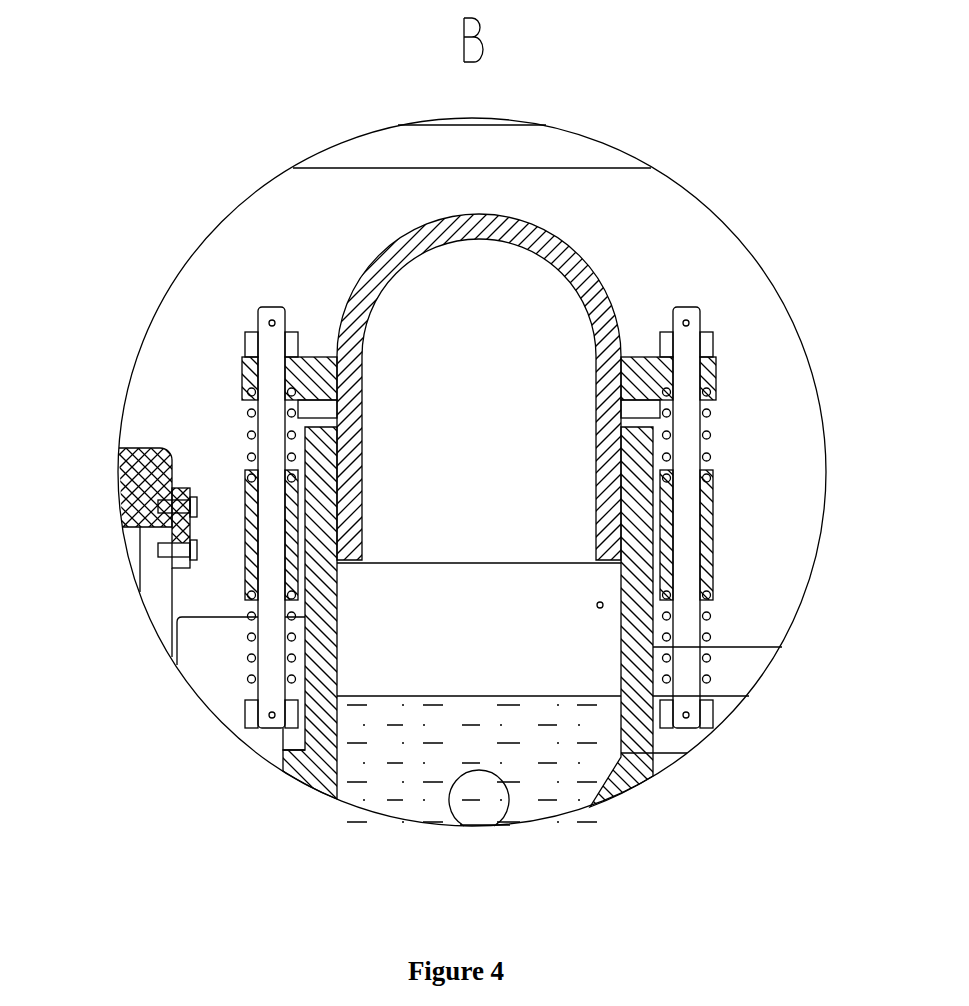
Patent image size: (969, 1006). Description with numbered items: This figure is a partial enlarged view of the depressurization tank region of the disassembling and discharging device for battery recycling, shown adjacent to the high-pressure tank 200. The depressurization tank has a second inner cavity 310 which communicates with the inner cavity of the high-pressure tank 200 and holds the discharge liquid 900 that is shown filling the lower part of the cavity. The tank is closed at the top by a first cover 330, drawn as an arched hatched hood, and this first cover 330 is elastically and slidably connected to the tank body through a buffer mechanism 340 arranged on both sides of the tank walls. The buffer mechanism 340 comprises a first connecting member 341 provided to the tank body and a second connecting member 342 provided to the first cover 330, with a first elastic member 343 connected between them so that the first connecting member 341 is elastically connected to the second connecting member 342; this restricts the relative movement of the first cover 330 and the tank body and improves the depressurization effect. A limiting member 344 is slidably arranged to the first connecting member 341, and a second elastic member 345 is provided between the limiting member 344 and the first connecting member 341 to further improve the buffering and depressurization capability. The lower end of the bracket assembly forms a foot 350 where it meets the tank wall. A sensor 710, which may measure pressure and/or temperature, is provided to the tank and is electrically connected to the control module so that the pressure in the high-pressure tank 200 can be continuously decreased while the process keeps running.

The high-pressure tank 200 is at (140, 482).
The second inner cavity 310 is at (438, 672).
The first cover 330 is at (553, 257).
The buffer mechanism 340 is at (717, 493).
The first connecting member 341 is at (715, 538).
The second connecting member 342 is at (718, 357).
The first elastic member 343 is at (705, 435).
The limiting member 344 is at (690, 627).
The second elastic member 345 is at (700, 682).
The bracket foot 350 is at (650, 742).
The sensor 710 is at (598, 600).
The discharge liquid 900 is at (590, 755).